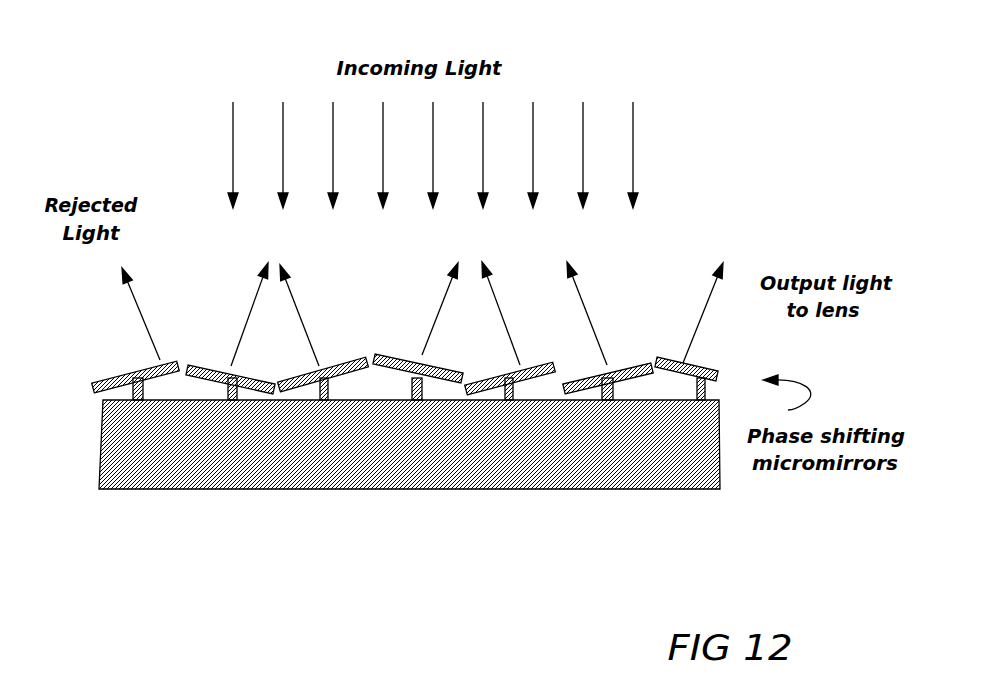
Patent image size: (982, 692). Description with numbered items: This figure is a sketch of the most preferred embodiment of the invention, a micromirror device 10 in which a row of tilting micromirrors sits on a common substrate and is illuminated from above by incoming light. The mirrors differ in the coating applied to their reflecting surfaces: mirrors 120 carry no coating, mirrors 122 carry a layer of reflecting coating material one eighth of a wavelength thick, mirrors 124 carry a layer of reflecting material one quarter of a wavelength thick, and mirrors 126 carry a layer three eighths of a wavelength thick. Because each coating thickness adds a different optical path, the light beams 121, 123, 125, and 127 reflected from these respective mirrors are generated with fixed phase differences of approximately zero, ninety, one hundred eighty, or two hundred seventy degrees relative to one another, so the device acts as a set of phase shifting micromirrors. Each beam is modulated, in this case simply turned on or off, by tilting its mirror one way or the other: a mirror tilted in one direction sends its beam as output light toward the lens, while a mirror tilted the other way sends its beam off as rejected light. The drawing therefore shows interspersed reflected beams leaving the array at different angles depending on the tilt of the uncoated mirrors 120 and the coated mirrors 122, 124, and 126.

The micromirror array device 10 is at (668, 160).
The mirrors 120 is at (258, 392).
The light beam 121 is at (253, 303).
The mirrors 122 is at (117, 380).
The light beam 123 is at (140, 305).
The mirrors 124 is at (343, 390).
The light beam 125 is at (703, 322).
The mirrors 126 is at (437, 368).
The light beam 127 is at (434, 323).